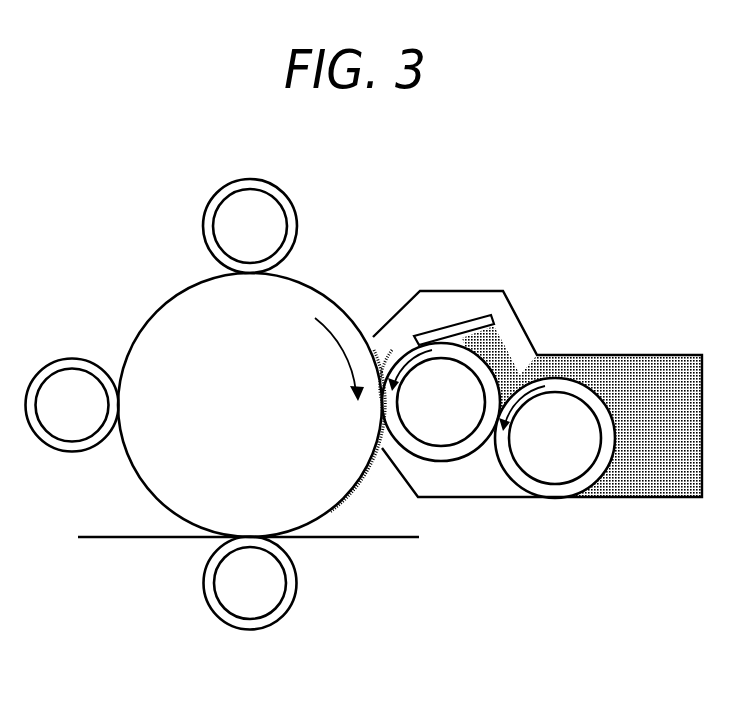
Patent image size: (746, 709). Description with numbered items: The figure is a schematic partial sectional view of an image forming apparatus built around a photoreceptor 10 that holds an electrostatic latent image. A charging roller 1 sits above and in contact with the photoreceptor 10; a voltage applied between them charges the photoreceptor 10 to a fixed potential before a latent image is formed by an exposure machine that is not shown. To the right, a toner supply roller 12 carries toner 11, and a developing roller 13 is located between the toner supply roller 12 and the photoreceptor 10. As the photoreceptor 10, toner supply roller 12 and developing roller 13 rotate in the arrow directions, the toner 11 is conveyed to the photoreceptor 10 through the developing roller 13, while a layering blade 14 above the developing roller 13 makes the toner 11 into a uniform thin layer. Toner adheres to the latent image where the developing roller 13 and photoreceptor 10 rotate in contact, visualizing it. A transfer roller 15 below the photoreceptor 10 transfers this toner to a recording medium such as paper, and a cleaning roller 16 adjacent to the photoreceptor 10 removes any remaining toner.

The charging roller 1 is at (279, 193).
The photoreceptor 10 is at (170, 325).
The toner 11 is at (618, 378).
The toner supply roller 12 is at (553, 492).
The developing roller 13 is at (447, 455).
The layering blade 14 is at (457, 318).
The transfer roller 15 is at (250, 630).
The cleaning roller 16 is at (41, 370).